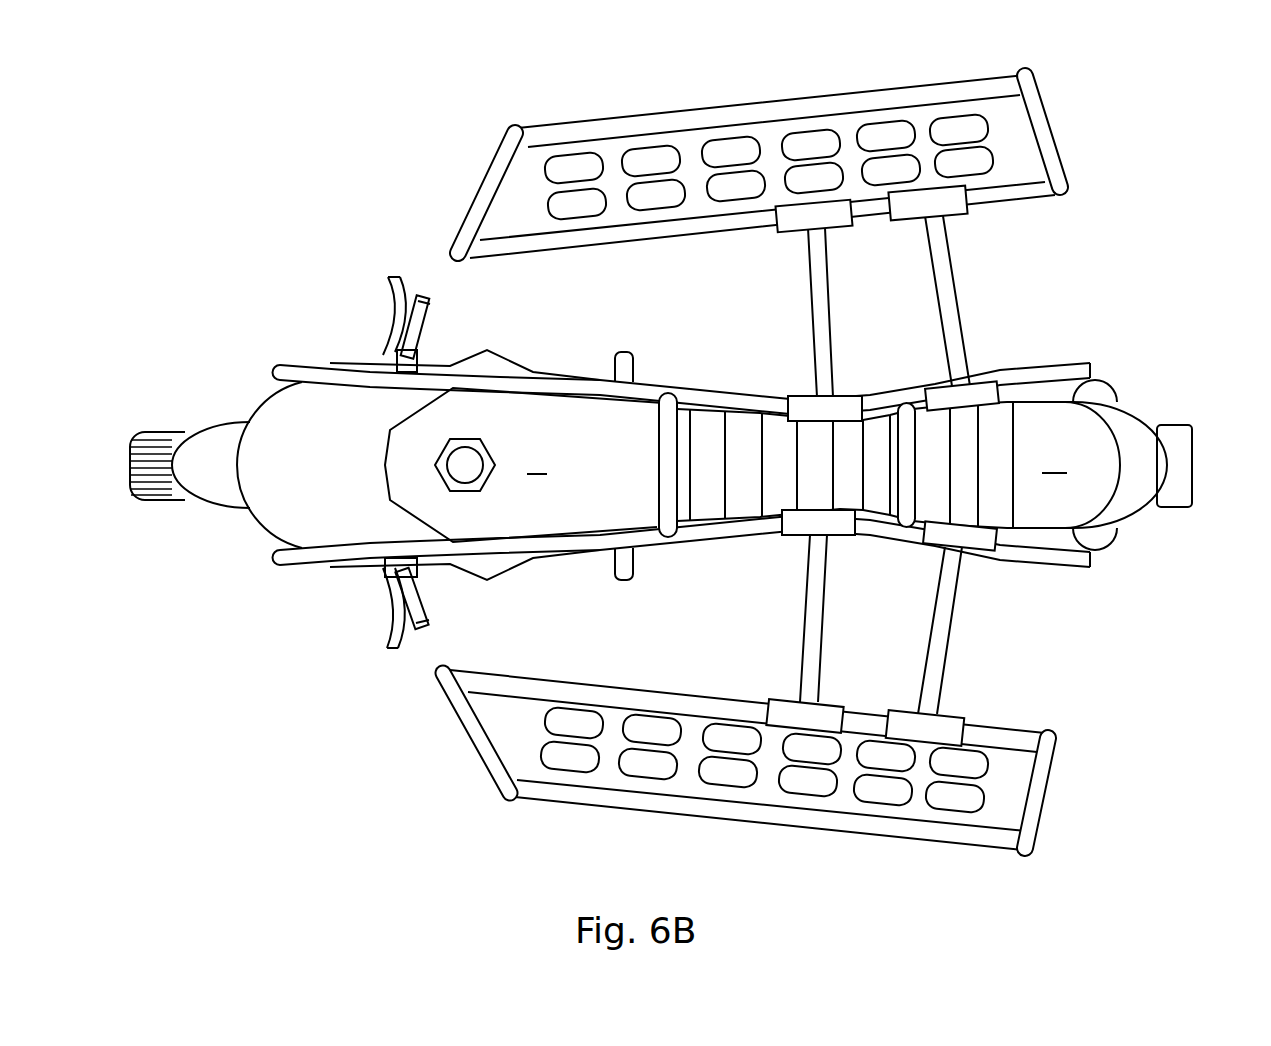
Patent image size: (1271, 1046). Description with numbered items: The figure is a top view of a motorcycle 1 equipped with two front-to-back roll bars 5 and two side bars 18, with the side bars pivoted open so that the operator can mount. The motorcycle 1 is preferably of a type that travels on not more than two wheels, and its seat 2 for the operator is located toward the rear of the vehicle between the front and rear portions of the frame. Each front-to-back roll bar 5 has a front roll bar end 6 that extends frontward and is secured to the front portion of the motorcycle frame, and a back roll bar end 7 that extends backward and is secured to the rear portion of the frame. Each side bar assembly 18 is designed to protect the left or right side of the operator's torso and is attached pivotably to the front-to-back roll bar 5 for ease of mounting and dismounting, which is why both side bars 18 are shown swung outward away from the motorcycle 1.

The motorcycle 1 is at (396, 462).
The seat 2 is at (934, 465).
The front-to-back roll bar 5 is at (665, 385).
The front roll bar end 6 is at (277, 358).
The back roll bar end 7 is at (1097, 365).
The side bar assembly 18 is at (1052, 118).